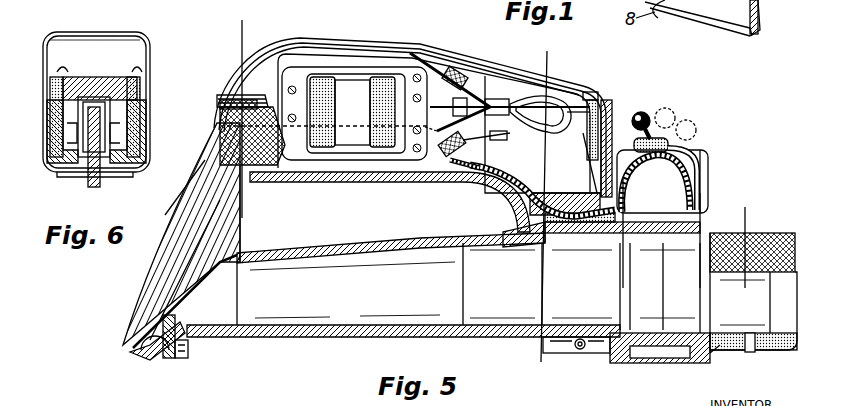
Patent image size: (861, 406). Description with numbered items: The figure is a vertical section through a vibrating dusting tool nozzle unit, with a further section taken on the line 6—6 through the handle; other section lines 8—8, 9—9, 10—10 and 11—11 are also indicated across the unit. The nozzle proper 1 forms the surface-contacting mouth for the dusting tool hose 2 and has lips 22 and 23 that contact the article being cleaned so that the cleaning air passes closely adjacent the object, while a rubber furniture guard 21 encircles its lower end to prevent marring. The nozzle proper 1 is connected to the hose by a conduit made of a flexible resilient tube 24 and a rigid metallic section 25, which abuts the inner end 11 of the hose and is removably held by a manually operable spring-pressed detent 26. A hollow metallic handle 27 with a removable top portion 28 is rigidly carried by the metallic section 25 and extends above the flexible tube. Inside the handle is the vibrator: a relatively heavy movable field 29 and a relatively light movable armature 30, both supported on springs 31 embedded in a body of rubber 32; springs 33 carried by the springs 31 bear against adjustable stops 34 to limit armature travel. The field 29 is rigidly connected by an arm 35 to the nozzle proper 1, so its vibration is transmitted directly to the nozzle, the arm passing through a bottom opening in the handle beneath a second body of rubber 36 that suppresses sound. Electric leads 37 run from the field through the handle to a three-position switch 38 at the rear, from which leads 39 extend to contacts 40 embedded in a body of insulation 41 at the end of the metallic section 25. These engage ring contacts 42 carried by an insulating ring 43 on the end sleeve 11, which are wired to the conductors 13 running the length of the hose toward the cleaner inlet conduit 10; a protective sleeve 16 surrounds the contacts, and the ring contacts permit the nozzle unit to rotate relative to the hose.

In FIG. 5, the nozzle proper 1 is at (130, 298).
In FIG. 5, the dusting tool hose 2 is at (790, 236).
In FIG. 5, the section line 6— 6 is at (242, 20).
In FIG. 5, the section line 8- 8 is at (623, 178).
In FIG. 5, the section line 9- 9 is at (700, 193).
In FIG. 5, the conduit 10 is at (745, 207).
In FIG. 5, the inner end of the hose 11 is at (545, 51).
In FIG. 5, the electrical conductors 13 is at (735, 222).
In FIG. 5, the protective sleeve 16 is at (715, 353).
In FIG. 5, the rubber furniture guard 21 is at (188, 350).
In FIG. 5, the lip 22 is at (125, 347).
In FIG. 5, the lip 23 is at (167, 360).
In FIG. 5, the flexible resilient tube 24 is at (333, 243).
In FIG. 5, the rigid metallic section 25 is at (515, 323).
In FIG. 5, the spring-pressed detent 26 is at (576, 355).
In FIG. 6, the hollow metallic handle 27 is at (47, 168).
In FIG. 5, the hollow metallic handle 27 is at (420, 182).
In FIG. 6, the removable top portion 28 is at (133, 58).
In FIG. 5, the removable top portion 28 is at (570, 84).
In FIG. 5, the field 29 is at (352, 112).
In FIG. 5, the armature 30 is at (340, 62).
In FIG. 5, the springs 31 is at (511, 106).
In FIG. 5, the body of rubber 32 is at (553, 133).
In FIG. 5, the springs 33 is at (462, 80).
In FIG. 5, the stops 34 is at (460, 68).
In FIG. 6, the arm 35 is at (100, 183).
In FIG. 5, the arm 35 is at (208, 202).
In FIG. 6, the second body of rubber 36 is at (105, 75).
In FIG. 5, the second body of rubber 36 is at (228, 93).
In FIG. 5, the electric leads 37 is at (557, 197).
In FIG. 5, the three-position switch 38 is at (688, 160).
In FIG. 5, the leads 39 is at (578, 197).
In FIG. 5, the contacts 40 is at (598, 238).
In FIG. 5, the body of insulation 41 is at (627, 245).
In FIG. 5, the ring contacts 42 is at (650, 245).
In FIG. 5, the insulating ring 43 is at (690, 340).